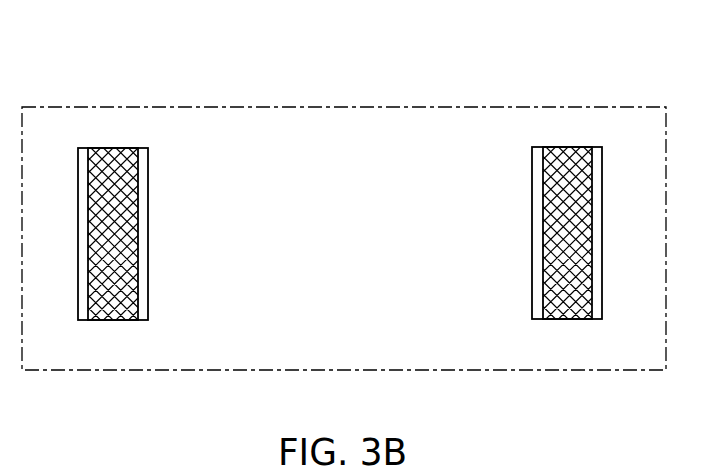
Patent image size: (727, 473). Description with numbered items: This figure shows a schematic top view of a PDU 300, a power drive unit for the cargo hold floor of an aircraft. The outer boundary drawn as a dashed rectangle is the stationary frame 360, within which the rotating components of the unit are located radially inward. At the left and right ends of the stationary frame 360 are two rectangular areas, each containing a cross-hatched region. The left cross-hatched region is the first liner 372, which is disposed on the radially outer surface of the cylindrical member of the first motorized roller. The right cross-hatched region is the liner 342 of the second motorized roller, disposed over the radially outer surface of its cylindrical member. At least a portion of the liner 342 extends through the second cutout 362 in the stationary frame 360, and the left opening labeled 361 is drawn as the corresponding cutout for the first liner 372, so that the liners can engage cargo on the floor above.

The PDU 300 is at (547, 68).
The stationary frame 360 is at (612, 113).
The first electrode 361 is at (80, 321).
The second cutout 362 is at (533, 321).
The first liner 372 is at (128, 203).
The liner 342 is at (541, 168).